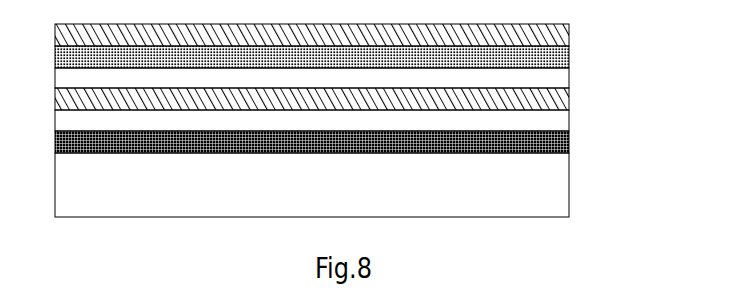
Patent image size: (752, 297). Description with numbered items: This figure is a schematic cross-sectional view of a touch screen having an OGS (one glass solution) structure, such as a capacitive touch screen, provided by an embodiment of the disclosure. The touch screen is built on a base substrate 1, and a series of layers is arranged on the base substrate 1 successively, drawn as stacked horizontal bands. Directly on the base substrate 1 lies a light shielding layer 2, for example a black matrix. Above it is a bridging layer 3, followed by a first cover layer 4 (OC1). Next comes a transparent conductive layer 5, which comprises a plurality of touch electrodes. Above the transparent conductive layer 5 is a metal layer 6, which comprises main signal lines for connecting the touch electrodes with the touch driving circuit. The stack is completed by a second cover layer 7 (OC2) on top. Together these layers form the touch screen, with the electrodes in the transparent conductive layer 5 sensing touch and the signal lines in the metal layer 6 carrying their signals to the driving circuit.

The base substrate 1 is at (336, 185).
The light shielding layer 2 is at (336, 141).
The bridging layer 3 is at (336, 118).
The first cover layer 4 is at (336, 97).
The transparent conductive layer 5 is at (336, 77).
The metal layer 6 is at (336, 55).
The second cover layer 7 is at (336, 35).